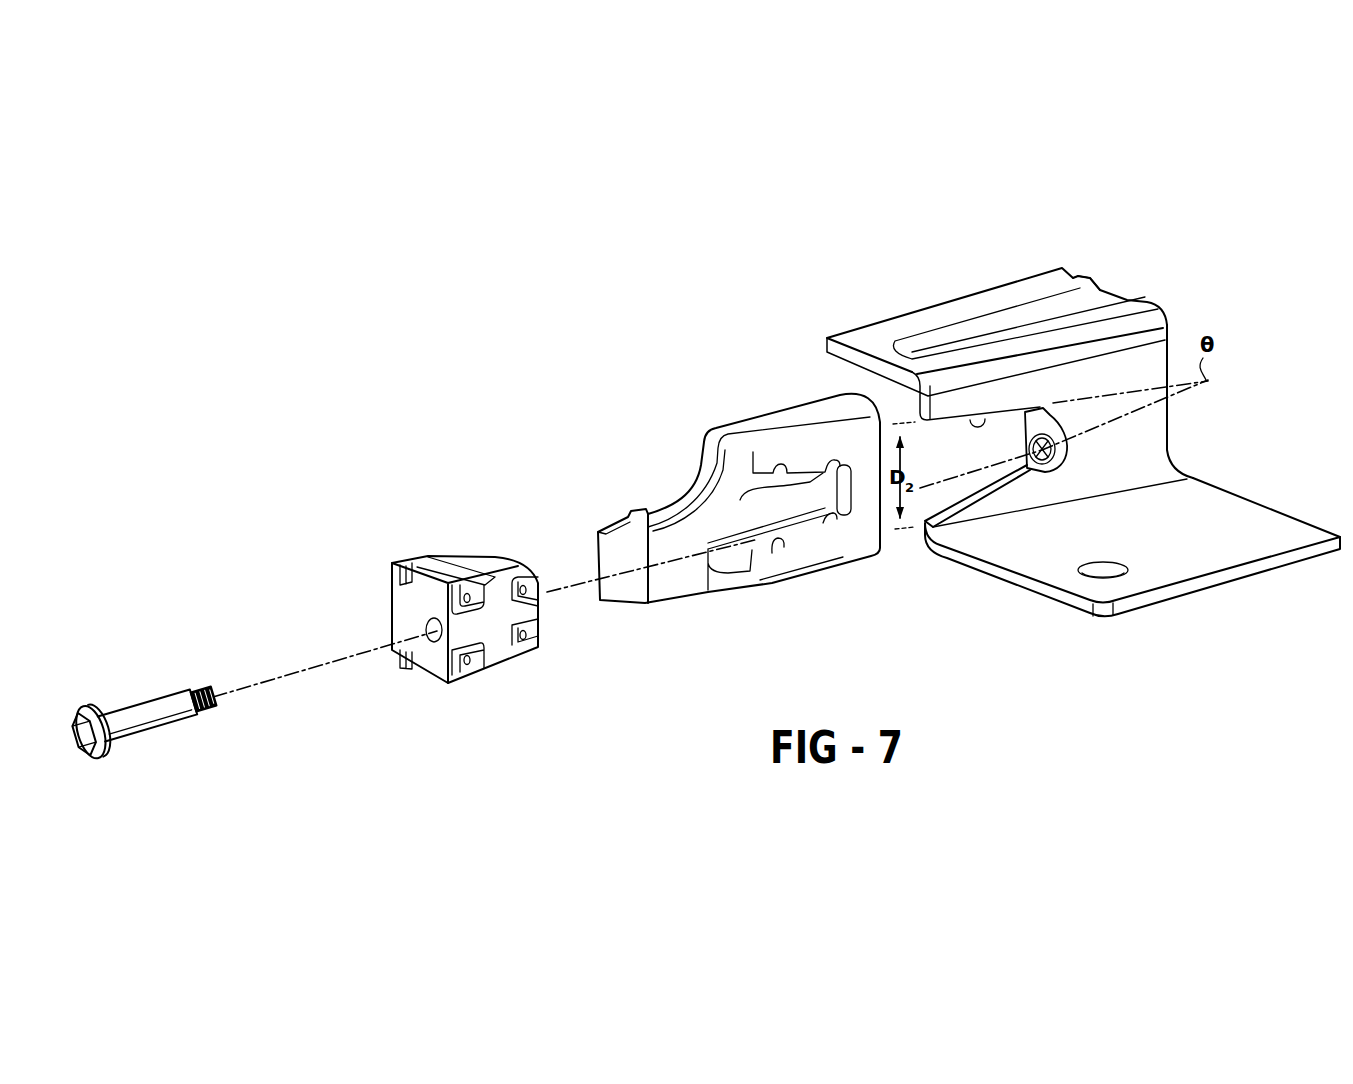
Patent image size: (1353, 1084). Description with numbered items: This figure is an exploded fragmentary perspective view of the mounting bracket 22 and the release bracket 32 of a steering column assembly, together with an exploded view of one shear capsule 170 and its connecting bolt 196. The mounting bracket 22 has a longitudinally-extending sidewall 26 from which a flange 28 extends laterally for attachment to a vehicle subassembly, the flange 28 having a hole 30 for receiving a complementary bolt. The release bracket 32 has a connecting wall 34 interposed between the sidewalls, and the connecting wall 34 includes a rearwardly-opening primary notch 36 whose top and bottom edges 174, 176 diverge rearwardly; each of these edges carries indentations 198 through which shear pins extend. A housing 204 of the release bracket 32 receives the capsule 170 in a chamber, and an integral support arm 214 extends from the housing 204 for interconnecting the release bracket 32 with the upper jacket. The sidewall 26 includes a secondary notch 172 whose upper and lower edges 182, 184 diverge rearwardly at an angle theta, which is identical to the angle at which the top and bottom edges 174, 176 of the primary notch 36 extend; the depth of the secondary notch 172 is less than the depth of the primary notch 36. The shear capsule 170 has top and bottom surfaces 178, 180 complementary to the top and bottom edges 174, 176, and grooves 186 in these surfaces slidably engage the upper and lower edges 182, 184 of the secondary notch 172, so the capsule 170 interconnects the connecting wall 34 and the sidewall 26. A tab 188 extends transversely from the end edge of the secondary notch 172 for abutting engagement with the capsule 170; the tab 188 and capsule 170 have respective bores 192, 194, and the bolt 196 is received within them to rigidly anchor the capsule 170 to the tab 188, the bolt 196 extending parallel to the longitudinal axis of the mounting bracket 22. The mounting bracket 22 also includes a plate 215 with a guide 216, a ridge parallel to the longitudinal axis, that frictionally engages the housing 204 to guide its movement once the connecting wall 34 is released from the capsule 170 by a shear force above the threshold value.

The mounting bracket 22 is at (1043, 601).
The sidewall 26 is at (1168, 454).
The flange 28 is at (1270, 507).
The hole 30 is at (1128, 565).
The release bracket 32 is at (705, 613).
The connecting wall 34 is at (800, 570).
The primary notch 36 is at (790, 412).
The shear capsule 170 is at (496, 645).
The secondary notch 172 is at (990, 509).
The top edge 174 is at (771, 498).
The bottom edge 176 is at (808, 566).
The top surface 178 is at (498, 572).
The bottom surface 180 is at (479, 673).
The upper edge 182 is at (990, 408).
The lower edge 184 is at (965, 502).
The groove 186 is at (401, 570).
The tab 188 is at (1072, 452).
The bore 192 is at (1020, 470).
The bore 194 is at (434, 640).
The bolt 196 is at (155, 703).
The indentation 198 is at (805, 462).
The housing 204 is at (700, 444).
The support arm 214 is at (648, 510).
The plate 215 is at (1017, 290).
The guide 216 is at (1080, 290).